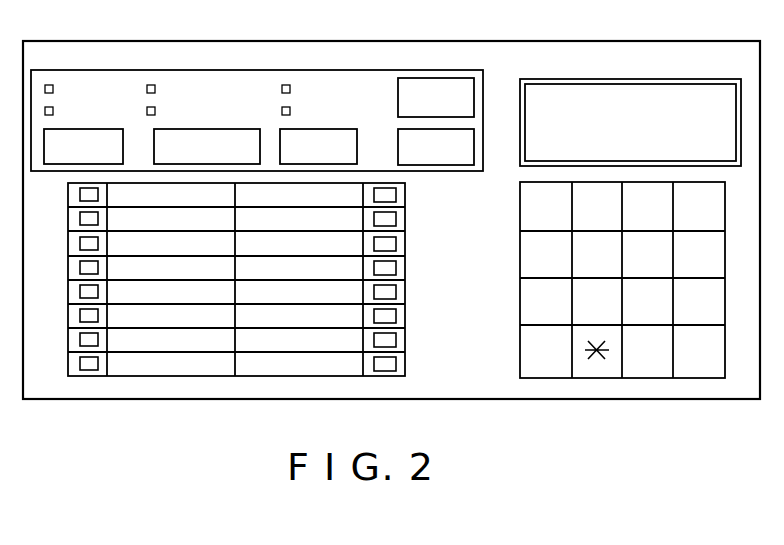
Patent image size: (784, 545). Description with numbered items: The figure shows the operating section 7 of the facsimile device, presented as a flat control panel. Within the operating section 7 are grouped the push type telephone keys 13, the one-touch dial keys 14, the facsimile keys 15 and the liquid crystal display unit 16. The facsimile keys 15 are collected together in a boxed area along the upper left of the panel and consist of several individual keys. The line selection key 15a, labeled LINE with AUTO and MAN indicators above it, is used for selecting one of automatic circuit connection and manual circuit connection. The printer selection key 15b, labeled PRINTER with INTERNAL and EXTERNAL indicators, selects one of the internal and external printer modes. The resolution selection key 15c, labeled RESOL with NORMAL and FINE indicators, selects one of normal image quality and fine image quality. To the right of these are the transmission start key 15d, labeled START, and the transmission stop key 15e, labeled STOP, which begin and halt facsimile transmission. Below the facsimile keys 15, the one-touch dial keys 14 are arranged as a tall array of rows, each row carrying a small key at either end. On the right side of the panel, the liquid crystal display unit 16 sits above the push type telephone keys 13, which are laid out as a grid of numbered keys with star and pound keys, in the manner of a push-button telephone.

The operating section 7 is at (490, 41).
The push type telephone keys 13 is at (520, 352).
The one-touch dial keys 14 is at (405, 285).
The facsimile keys 15 is at (240, 76).
The line selection key 15a is at (113, 128).
The printer selection key 15b is at (257, 130).
The resolution selection key 15c is at (358, 137).
The transmission start key 15d is at (465, 86).
The transmission stop key 15e is at (463, 166).
The liquid crystal display unit 16 is at (686, 93).